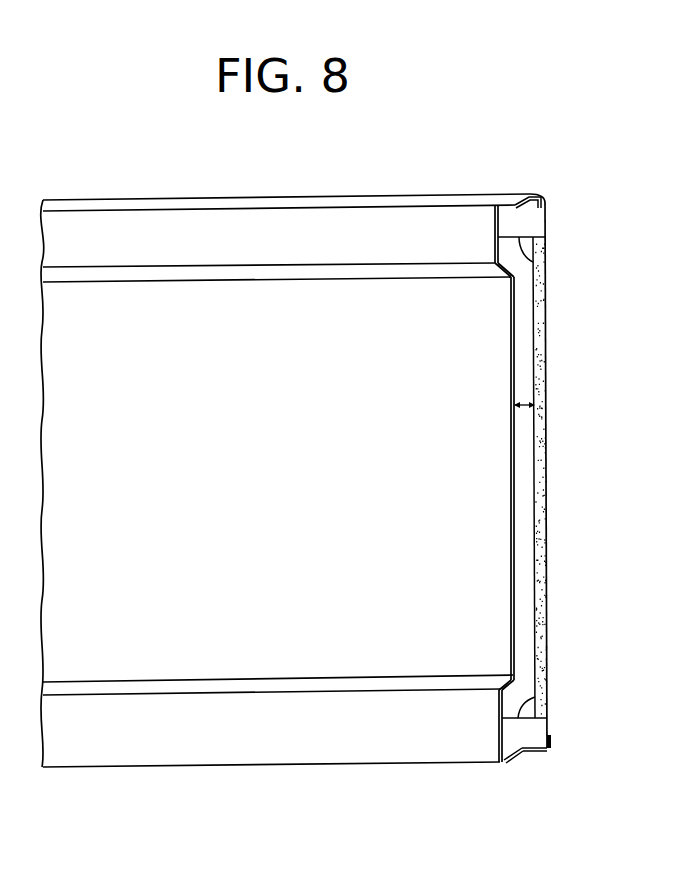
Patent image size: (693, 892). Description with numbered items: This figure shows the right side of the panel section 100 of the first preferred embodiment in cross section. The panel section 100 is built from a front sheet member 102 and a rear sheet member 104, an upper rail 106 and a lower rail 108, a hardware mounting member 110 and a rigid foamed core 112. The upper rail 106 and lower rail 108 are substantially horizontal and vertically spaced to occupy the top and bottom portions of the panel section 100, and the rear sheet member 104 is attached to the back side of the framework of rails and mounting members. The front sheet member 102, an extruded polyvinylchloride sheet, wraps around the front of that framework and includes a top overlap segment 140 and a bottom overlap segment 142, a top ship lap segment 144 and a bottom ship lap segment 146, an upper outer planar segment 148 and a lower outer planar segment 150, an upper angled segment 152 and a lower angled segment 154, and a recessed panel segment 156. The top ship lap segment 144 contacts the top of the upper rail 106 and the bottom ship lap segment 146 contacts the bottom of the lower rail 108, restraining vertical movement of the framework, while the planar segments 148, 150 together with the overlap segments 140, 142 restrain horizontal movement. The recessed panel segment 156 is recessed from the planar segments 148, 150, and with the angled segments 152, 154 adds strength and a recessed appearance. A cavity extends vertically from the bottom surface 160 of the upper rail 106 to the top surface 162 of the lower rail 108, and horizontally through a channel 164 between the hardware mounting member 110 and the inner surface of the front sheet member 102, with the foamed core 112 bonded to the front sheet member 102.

The panel section 100 is at (541, 156).
The front sheet member 102 is at (360, 742).
The rear sheet member 104 is at (552, 711).
The upper rail 106 is at (533, 223).
The lower rail 108 is at (513, 762).
The hardware mounting member 110 is at (547, 570).
The rigid foamed core 112 is at (533, 478).
The top overlap segment 140 is at (547, 203).
The bottom overlap segment 142 is at (551, 748).
The top ship lap segment 144 is at (482, 196).
The bottom ship lap segment 146 is at (538, 755).
The upper outer planar segment 148 is at (420, 248).
The lower outer planar segment 150 is at (455, 749).
The upper angled segment 152 is at (437, 274).
The lower angled segment 154 is at (440, 685).
The recessed panel segment 156 is at (412, 473).
The bottom surface of upper rail 160 is at (535, 262).
The top surface of lower rail 162 is at (533, 701).
The channel 164 is at (527, 404).